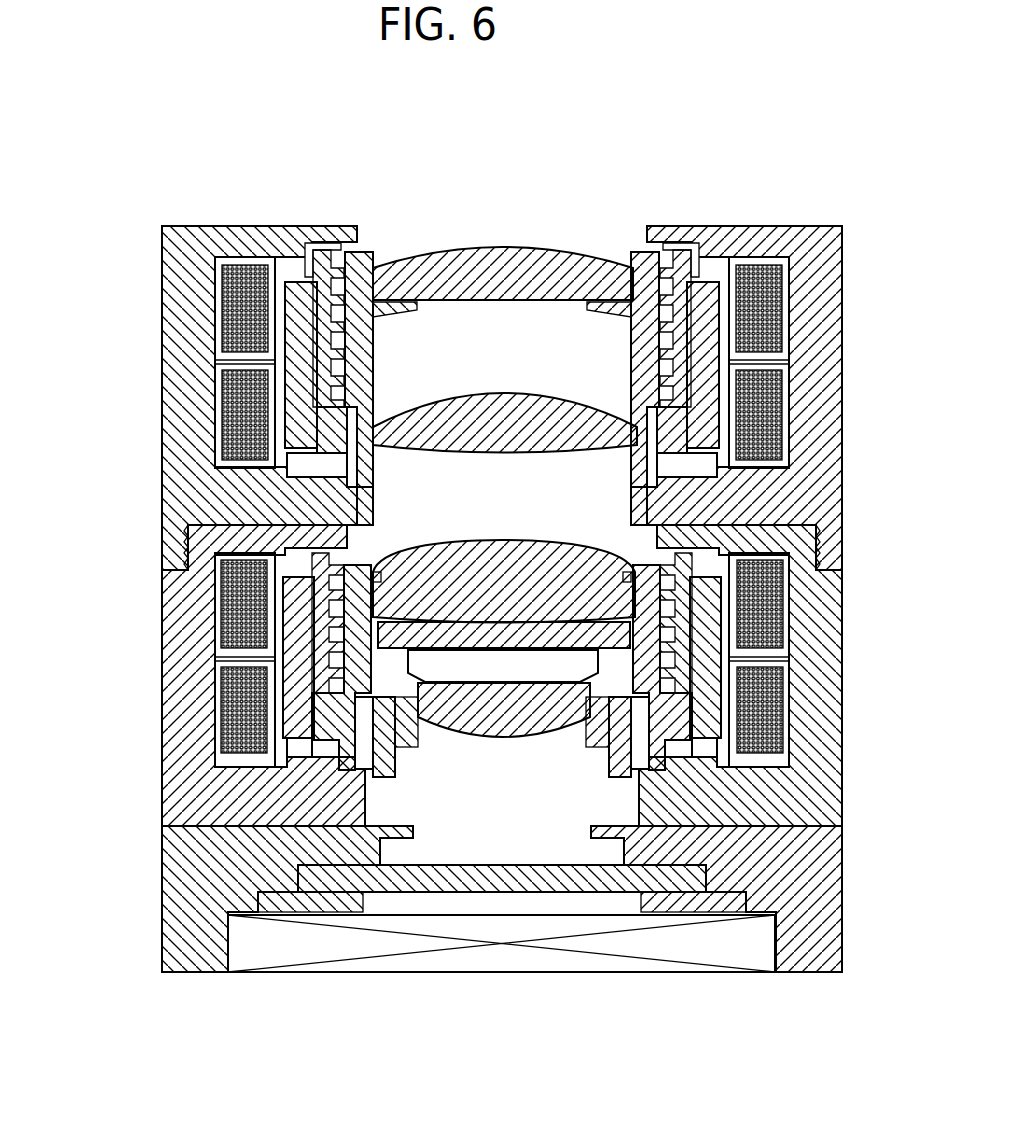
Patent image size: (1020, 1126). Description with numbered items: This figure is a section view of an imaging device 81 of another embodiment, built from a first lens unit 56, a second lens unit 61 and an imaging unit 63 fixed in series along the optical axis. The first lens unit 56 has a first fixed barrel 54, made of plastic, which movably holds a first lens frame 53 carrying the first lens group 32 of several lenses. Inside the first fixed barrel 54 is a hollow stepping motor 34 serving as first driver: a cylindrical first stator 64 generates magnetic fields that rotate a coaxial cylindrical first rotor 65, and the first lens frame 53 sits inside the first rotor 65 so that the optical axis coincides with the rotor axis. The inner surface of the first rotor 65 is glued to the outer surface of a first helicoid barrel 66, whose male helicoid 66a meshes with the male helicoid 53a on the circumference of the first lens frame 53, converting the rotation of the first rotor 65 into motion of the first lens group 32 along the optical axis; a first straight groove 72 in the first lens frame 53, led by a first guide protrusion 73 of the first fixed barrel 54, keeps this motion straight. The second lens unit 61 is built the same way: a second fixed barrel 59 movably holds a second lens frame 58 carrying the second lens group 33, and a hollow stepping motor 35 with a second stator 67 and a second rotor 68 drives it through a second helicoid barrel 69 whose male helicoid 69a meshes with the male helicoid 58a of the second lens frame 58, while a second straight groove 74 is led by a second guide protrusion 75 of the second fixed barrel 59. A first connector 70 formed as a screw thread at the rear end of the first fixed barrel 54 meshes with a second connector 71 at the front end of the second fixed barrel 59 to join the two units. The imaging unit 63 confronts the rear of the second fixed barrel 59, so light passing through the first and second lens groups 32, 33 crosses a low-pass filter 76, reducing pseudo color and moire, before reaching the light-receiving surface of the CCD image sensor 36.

The imaging device 81 is at (266, 117).
The first fixed barrel 54 is at (218, 228).
The first rotor 65 is at (235, 282).
The first stator 64 is at (290, 345).
The first guide protrusion 73 is at (300, 462).
The male helicoid 66a is at (320, 242).
The first helicoid barrel 66 is at (336, 262).
The first lens frame 53 is at (360, 258).
The male helicoid 53a is at (376, 318).
The first straight groove 72 is at (350, 430).
The second connector 71 is at (365, 490).
The first lens group 32 is at (503, 417).
The hollow stepping motor 34 is at (118, 270).
The first lens unit 56 is at (85, 222).
The second fixed barrel 59 is at (200, 592).
The first connector 70 is at (186, 552).
The second stator 67 is at (232, 640).
The second rotor 68 is at (235, 690).
The second straight groove 74 is at (298, 750).
The second helicoid barrel 69 is at (325, 690).
The male helicoid 69a is at (377, 575).
The second lens frame 58 is at (395, 778).
The male helicoid 58a is at (408, 700).
The second guide protrusion 75 is at (366, 772).
The second lens group 33 is at (492, 735).
The hollow stepping motor 35 is at (118, 635).
The second lens unit 61 is at (88, 572).
The imaging unit 63 is at (93, 826).
The low-pass filter 76 is at (428, 866).
The CCD image sensor 36 is at (505, 962).